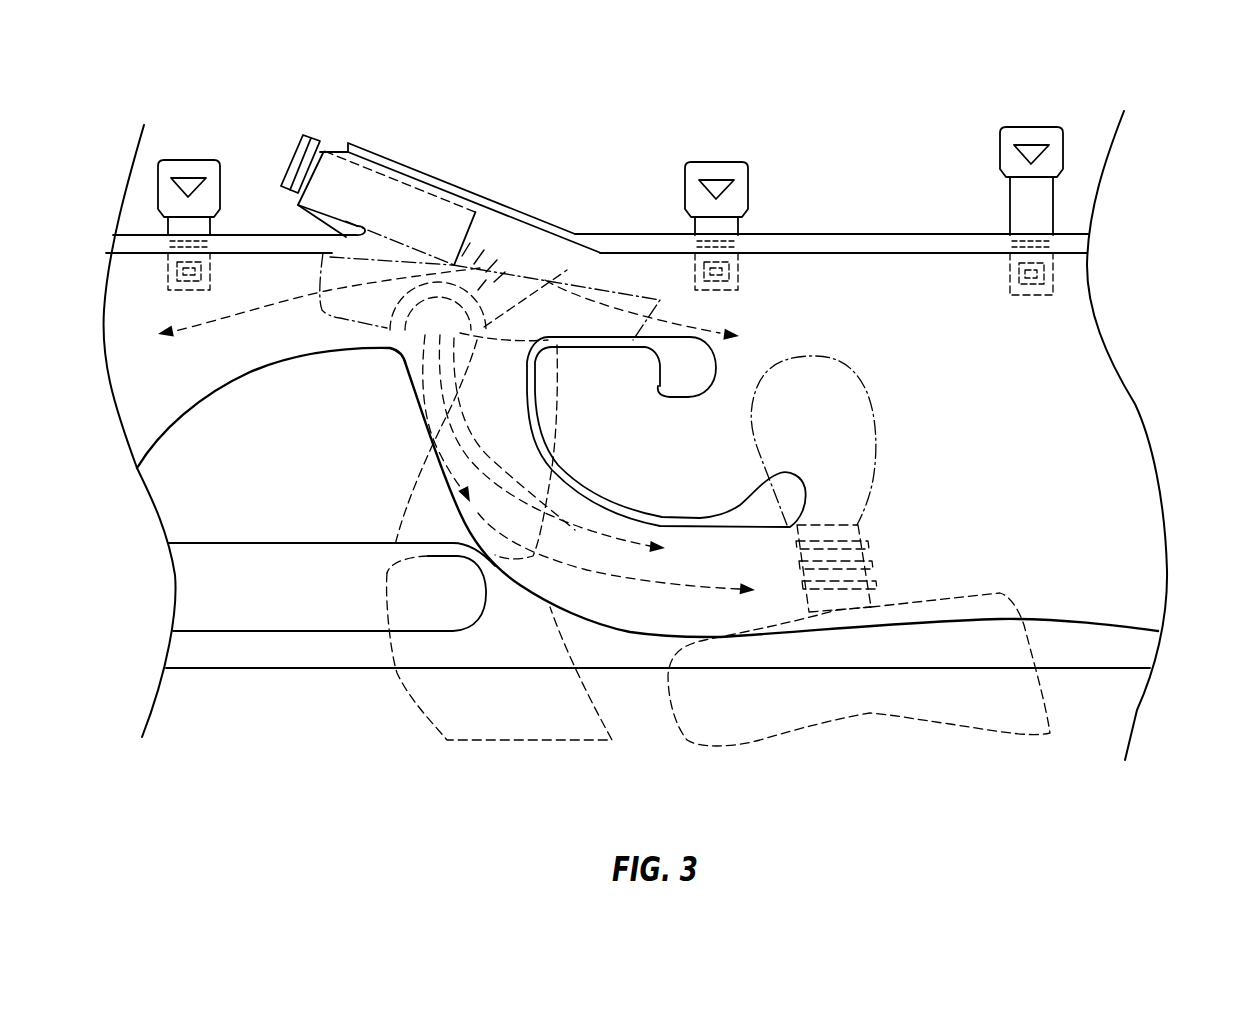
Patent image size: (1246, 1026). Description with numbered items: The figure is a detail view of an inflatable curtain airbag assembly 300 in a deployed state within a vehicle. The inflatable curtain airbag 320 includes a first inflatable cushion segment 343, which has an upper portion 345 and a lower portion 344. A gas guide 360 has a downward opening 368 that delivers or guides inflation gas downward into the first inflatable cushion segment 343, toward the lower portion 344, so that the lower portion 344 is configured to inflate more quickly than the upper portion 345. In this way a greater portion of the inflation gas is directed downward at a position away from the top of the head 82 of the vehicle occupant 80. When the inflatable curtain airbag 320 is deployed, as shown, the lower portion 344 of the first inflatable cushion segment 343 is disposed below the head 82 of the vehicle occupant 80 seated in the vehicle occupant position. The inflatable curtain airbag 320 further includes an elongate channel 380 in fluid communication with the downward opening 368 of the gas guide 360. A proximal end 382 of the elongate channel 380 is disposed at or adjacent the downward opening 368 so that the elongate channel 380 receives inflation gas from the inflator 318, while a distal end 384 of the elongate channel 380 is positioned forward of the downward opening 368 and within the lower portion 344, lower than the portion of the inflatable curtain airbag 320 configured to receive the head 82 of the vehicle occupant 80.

The inflatable curtain airbag assembly 300 is at (827, 115).
The gas guide 360 is at (435, 178).
The inflator 318 is at (440, 218).
The downward opening 368 is at (530, 292).
The inflatable curtain airbag 320 is at (912, 252).
The upper portion 345 is at (1050, 310).
The first inflatable cushion segment 343 is at (1060, 437).
The lower portion 344 is at (1057, 597).
The head 82 is at (832, 432).
The vehicle occupant 80 is at (975, 597).
The proximal end 382 is at (410, 362).
The elongate channel 380 is at (637, 612).
The distal end 384 is at (776, 604).